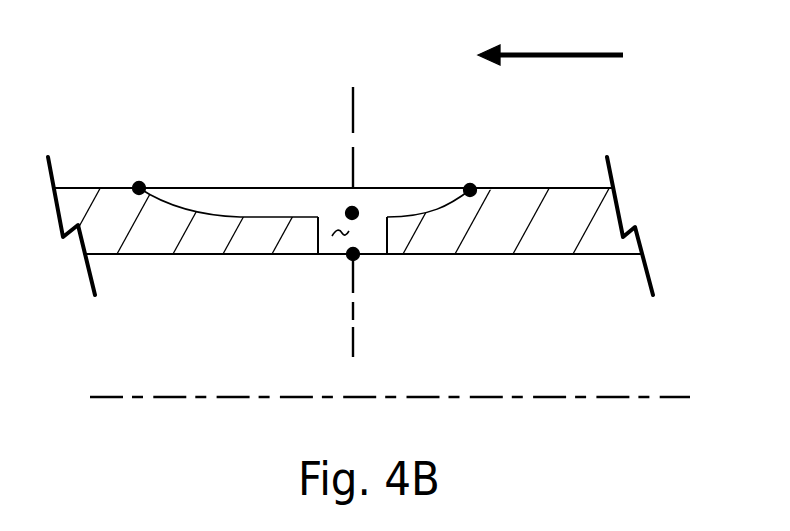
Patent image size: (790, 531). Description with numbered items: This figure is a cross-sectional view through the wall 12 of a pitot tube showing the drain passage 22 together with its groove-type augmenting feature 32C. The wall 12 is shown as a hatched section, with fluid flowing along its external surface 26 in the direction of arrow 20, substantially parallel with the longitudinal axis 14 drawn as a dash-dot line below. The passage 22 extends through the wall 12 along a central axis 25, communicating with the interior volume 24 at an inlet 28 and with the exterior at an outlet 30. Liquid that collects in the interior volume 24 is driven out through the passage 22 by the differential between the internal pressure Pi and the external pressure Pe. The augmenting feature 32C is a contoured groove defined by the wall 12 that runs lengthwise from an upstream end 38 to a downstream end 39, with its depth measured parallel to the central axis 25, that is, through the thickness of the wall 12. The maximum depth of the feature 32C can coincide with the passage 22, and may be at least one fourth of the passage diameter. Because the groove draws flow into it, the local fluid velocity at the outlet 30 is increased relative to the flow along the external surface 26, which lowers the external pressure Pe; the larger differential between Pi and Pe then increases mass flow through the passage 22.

The wall 12 is at (80, 156).
The longitudinal axis 14 is at (132, 395).
The arrow 20 is at (552, 52).
The passage 22 is at (337, 233).
The interior volume 24 is at (458, 344).
The central axis 25 is at (353, 133).
The external surface 26 is at (557, 190).
The inlet 28 is at (374, 273).
The outlet 30 is at (338, 165).
The augmenting feature 32C is at (245, 195).
The upstream end 38 is at (470, 190).
The downstream end 39 is at (139, 188).
The external pressure Pe is at (352, 213).
The internal pressure Pi is at (353, 256).